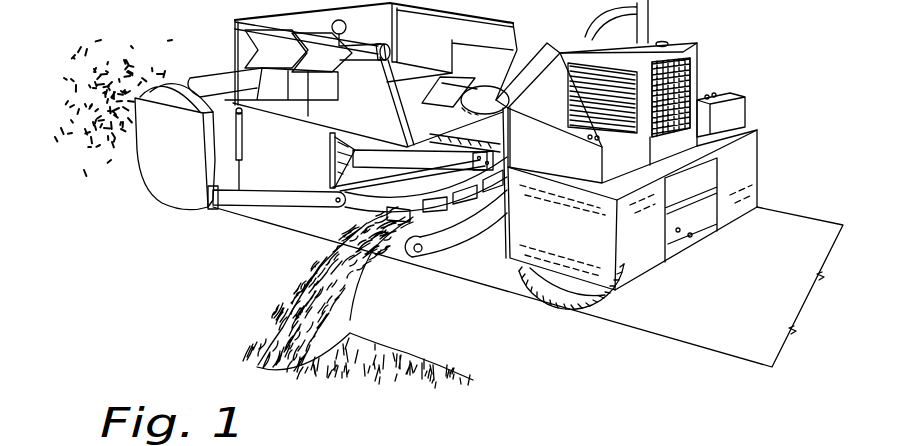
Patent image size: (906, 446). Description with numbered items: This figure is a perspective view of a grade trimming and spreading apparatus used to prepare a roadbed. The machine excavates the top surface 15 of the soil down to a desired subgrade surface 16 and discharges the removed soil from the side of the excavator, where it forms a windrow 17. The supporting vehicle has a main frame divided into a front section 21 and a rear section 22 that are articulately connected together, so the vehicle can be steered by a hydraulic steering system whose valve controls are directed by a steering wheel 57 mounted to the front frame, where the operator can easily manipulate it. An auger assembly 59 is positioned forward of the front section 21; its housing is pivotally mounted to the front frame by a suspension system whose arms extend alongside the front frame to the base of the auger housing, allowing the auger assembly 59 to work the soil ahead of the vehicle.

The top surface of the soil 15 is at (150, 60).
The subgrade surface 16 is at (755, 298).
The windrow 17 is at (397, 352).
The front section 21 is at (362, 122).
The rear section 22 is at (575, 238).
The steering wheel 57 is at (346, 29).
The auger assembly 59 is at (175, 147).